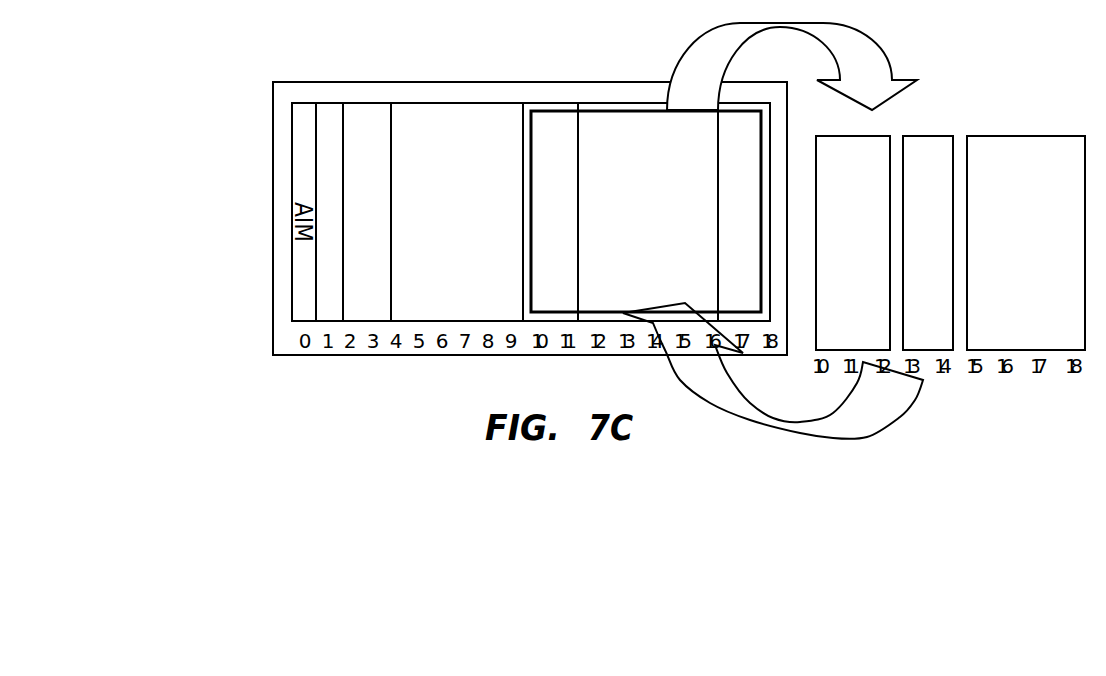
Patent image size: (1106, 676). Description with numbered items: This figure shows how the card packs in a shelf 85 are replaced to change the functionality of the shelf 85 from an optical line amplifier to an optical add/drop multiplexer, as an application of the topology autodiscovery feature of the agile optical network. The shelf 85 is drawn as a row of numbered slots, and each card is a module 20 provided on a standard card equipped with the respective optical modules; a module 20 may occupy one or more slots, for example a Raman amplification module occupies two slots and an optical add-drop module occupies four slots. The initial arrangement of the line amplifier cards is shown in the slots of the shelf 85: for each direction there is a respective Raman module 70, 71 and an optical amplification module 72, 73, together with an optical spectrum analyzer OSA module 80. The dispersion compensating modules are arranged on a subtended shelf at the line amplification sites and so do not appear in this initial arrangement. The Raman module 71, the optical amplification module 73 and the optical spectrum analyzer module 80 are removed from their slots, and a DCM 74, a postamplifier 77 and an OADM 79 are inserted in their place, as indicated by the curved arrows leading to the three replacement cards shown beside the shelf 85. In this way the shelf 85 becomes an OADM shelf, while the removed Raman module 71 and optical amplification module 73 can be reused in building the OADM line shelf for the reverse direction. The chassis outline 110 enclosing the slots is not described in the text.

The module 20 is at (330, 113).
The shelf 85 is at (472, 82).
The chassis / line card arrangement 110 is at (297, 184).
The Raman module 70 is at (355, 160).
The Raman module 71 is at (543, 160).
The optical amplification module 72 is at (443, 160).
The optical amplification module 73 is at (635, 160).
The optical spectrum analyzer OSA module 80 is at (728, 160).
The dispersion compensating module DCM 74 is at (841, 207).
The postamplifier 77 is at (916, 207).
The OADM 79 is at (1010, 207).